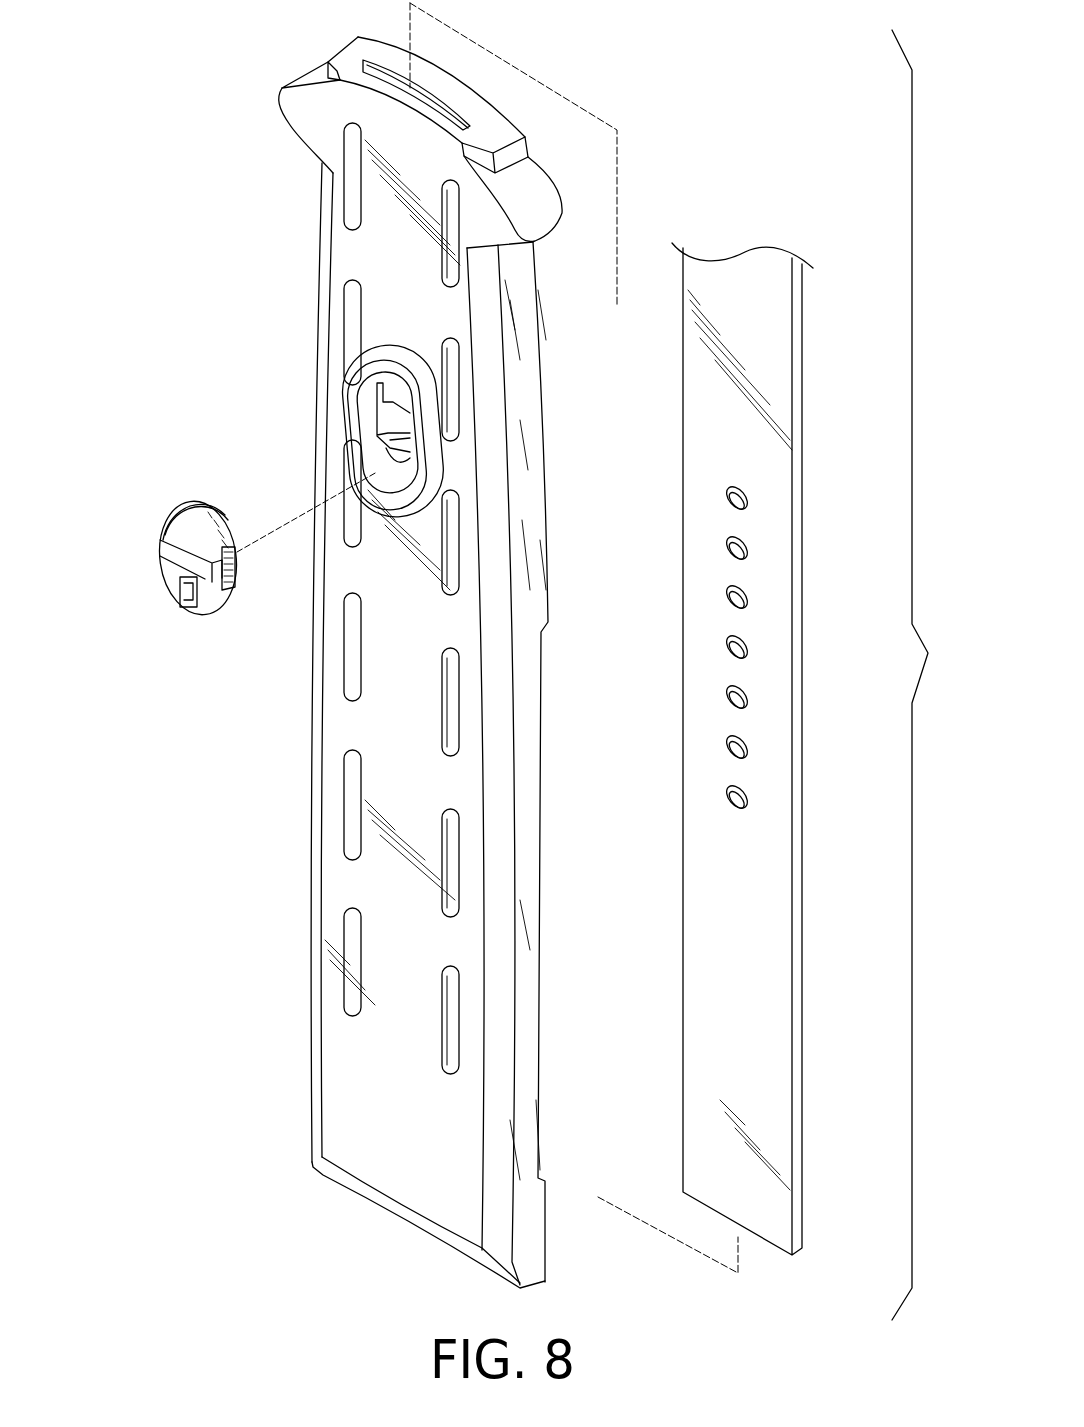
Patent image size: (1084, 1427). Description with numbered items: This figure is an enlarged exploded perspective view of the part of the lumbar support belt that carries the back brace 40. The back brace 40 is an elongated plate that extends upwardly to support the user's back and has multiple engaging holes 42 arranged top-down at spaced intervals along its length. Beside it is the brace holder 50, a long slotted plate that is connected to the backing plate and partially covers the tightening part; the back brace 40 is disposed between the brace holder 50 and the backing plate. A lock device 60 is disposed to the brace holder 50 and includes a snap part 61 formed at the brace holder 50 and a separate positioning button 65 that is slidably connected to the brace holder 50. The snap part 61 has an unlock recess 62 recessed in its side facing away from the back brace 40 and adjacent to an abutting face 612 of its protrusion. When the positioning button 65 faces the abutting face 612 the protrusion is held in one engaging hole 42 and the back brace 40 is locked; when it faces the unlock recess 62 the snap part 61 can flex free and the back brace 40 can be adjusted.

The back brace 40 is at (814, 383).
The engaging holes 42 is at (733, 562).
The brace holder 50 is at (270, 213).
The lock device 60 is at (155, 521).
The snap part 61 is at (397, 480).
The unlock recess 62 is at (402, 422).
The abutting face 612 is at (402, 457).
The positioning button 65 is at (195, 532).